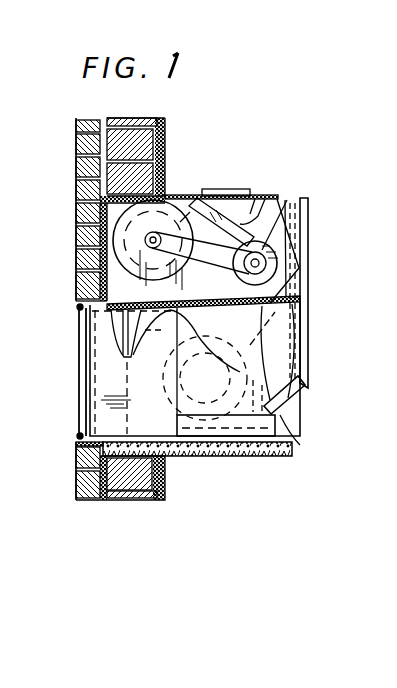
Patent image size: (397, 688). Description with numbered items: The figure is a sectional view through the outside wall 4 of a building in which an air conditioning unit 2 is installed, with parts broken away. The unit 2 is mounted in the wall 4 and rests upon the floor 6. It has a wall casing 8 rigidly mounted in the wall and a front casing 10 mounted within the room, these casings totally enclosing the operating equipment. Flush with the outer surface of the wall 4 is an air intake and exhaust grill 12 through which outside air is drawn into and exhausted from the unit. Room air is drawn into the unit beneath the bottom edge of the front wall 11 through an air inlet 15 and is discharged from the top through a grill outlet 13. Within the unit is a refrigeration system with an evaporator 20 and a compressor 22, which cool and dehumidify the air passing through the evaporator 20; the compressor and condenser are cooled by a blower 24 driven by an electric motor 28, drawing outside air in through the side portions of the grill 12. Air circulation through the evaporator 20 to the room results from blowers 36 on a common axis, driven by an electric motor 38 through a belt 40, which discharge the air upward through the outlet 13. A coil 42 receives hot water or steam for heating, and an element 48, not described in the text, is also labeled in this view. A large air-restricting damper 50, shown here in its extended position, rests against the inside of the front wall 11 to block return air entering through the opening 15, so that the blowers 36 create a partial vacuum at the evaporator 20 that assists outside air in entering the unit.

The air conditioning unit 2 is at (78, 420).
The outside wall 4 is at (132, 128).
The floor 6 is at (229, 457).
The wall casing 8 is at (76, 278).
The front casing 10 is at (391, 518).
The front wall 11 is at (312, 378).
The air intake and exhaust grill 12 is at (80, 394).
The grill outlet 13 is at (218, 189).
The air inlet 15 is at (305, 398).
The evaporator 20 is at (283, 307).
The compressor 22 is at (141, 329).
The blower 24 is at (90, 365).
The electric motor 28 is at (193, 440).
The blowers 36 is at (160, 205).
The electric motor 38 is at (277, 251).
The belt 40 is at (280, 199).
The coil 42 is at (250, 194).
The guide 48 is at (284, 322).
The air-restricting damper 50 is at (286, 408).